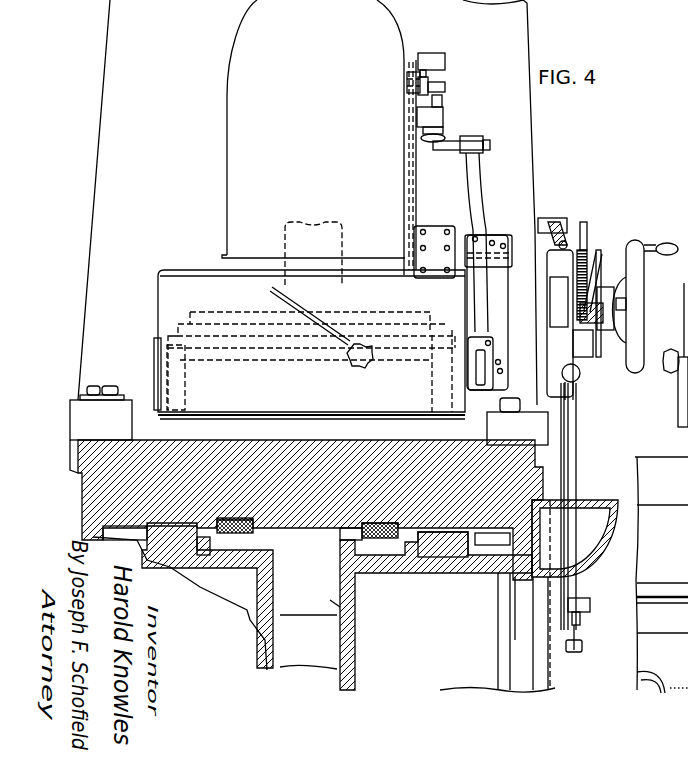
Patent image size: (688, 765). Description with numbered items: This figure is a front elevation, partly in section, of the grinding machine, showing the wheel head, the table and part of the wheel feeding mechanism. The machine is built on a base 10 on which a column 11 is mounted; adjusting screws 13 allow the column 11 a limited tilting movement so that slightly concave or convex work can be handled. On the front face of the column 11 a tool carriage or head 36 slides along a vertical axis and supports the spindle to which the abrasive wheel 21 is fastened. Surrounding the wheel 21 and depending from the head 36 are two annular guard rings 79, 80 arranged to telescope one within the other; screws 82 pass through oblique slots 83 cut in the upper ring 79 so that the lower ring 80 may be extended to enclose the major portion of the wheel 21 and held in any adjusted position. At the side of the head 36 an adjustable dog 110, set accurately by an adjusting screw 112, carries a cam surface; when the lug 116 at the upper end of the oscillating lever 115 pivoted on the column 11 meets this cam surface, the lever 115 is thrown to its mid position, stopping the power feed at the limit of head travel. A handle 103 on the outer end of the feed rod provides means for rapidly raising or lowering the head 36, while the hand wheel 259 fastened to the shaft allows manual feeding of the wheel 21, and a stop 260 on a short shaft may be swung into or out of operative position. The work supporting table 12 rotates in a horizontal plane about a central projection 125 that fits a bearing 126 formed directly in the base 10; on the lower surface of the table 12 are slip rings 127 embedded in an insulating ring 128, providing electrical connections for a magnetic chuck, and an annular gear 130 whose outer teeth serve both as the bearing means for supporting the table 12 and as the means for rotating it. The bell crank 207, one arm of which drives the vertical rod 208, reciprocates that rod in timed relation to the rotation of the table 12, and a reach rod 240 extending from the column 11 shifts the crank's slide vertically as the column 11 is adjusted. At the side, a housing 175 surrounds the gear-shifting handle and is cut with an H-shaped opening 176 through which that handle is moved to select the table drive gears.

The base 10 is at (445, 562).
The column 11 is at (528, 153).
The work supporting table 12 is at (165, 444).
The adjusting screws 13 is at (78, 396).
The abrasive wheel 21 is at (300, 419).
The tool carriage or head 36 is at (236, 123).
The annular ring 79 is at (158, 291).
The annular ring 80 is at (154, 360).
The screws 82 is at (368, 370).
The oblique slots 83 is at (262, 296).
The handle 103 is at (576, 378).
The adjustable dog 110 is at (440, 61).
The adjusting screw 112 is at (442, 98).
The oscillating lever 115 is at (482, 214).
The lug 116 is at (450, 142).
The central projection 125 is at (352, 622).
The bearing 126 is at (250, 605).
The electrical connections 127 is at (385, 539).
The insulating ring 128 is at (372, 540).
The gear 130 is at (452, 545).
The housing 175 is at (687, 653).
The opening 176 is at (687, 621).
The bell crank 207 is at (582, 640).
The vertical rod 208 is at (578, 433).
The reach rod 240 is at (560, 433).
The hand wheel 259 is at (642, 268).
The stop 260 is at (560, 222).